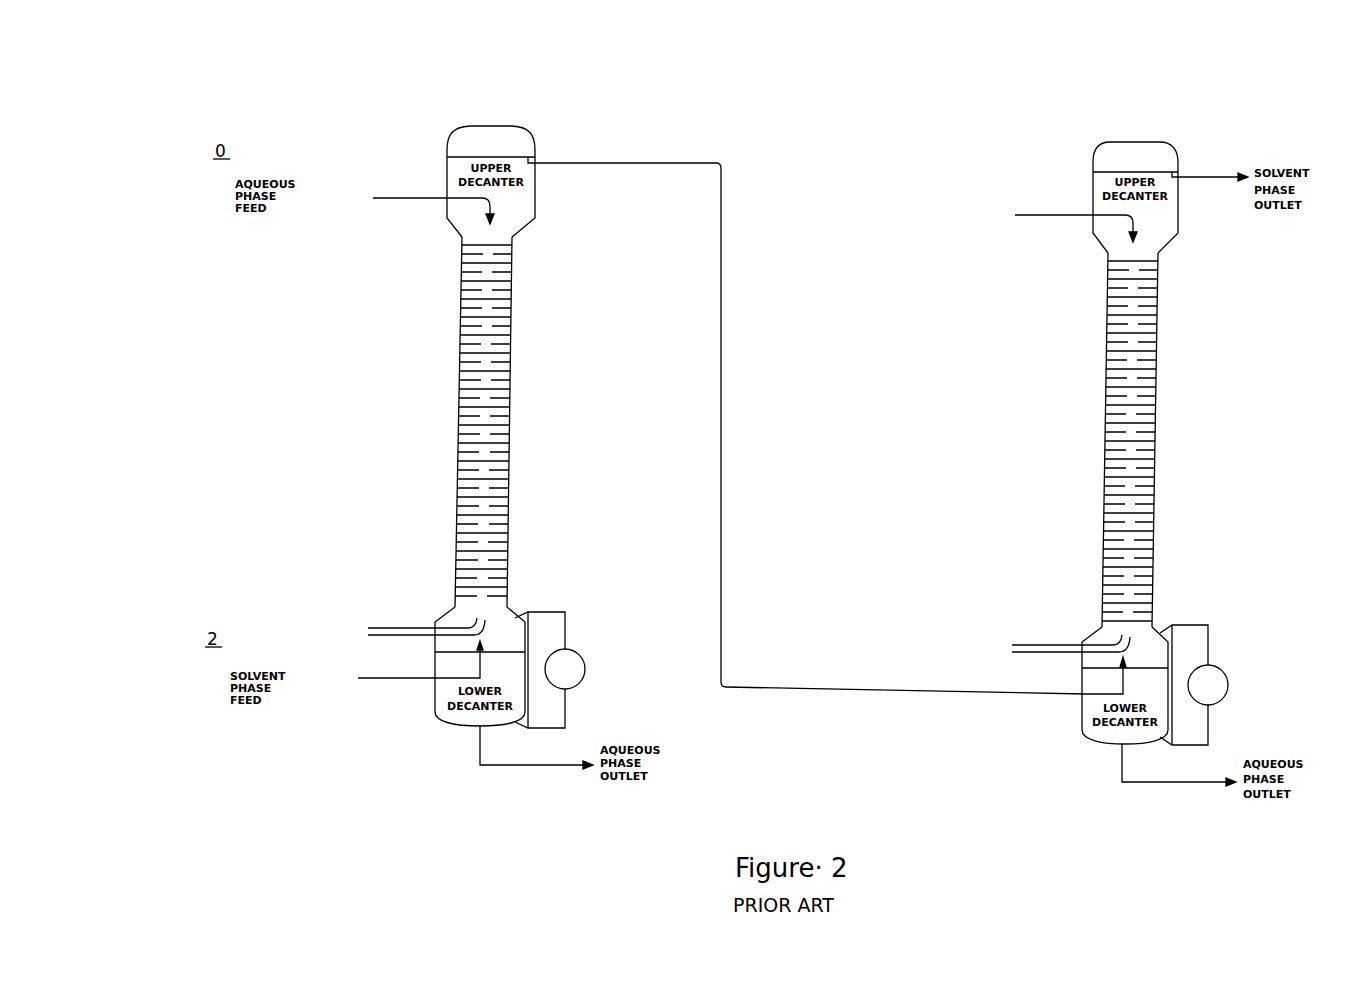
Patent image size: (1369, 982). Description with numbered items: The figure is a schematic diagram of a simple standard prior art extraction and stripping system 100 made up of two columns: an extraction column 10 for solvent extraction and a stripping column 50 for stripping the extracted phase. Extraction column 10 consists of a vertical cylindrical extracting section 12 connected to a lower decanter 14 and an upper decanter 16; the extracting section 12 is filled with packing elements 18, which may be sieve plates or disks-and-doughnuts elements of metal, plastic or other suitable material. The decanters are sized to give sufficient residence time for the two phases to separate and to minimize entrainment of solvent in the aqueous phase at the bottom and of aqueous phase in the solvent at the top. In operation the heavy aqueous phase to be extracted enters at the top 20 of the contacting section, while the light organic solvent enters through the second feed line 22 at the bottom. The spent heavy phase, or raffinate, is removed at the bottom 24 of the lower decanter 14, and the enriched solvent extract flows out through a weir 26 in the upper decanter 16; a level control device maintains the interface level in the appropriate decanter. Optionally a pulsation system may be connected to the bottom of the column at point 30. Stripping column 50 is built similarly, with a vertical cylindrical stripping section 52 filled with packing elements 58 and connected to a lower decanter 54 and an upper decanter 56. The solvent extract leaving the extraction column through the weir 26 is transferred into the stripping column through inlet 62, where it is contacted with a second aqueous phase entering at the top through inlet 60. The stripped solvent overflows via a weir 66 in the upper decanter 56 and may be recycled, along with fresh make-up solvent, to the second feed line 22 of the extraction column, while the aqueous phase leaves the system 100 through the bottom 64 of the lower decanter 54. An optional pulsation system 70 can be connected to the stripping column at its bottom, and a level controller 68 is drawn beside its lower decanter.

The extraction and stripping system 100 is at (995, 123).
The extraction column 10 is at (538, 493).
The stripping column 50 is at (1183, 508).
The extracting section 12 is at (460, 430).
The lower decanter 14 is at (460, 725).
The upper decanter 16 is at (517, 222).
The packing elements 18 is at (497, 453).
The top of contacting section 20 is at (397, 198).
The second feed line 22 is at (388, 677).
The bottom of lower decanter 24 is at (566, 764).
The weir 26 is at (532, 163).
The pulsation system connection point 30 is at (370, 628).
The stripping section 52 is at (1105, 448).
The lower decanter 54 is at (1107, 740).
The upper decanter 56 is at (1160, 237).
The packing elements 58 is at (1140, 470).
The inlet 60 is at (1043, 214).
The inlet 62 is at (1012, 692).
The bottom of lower decanter 64 is at (1207, 781).
The weir 66 is at (1176, 171).
The level controller of second column 68 is at (1215, 668).
The pulsation system 70 is at (1012, 645).